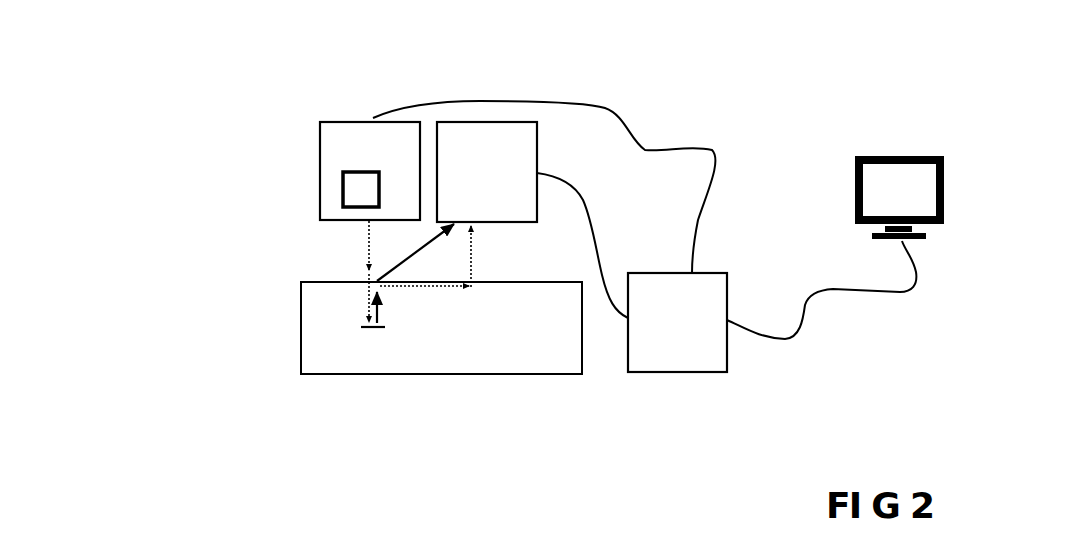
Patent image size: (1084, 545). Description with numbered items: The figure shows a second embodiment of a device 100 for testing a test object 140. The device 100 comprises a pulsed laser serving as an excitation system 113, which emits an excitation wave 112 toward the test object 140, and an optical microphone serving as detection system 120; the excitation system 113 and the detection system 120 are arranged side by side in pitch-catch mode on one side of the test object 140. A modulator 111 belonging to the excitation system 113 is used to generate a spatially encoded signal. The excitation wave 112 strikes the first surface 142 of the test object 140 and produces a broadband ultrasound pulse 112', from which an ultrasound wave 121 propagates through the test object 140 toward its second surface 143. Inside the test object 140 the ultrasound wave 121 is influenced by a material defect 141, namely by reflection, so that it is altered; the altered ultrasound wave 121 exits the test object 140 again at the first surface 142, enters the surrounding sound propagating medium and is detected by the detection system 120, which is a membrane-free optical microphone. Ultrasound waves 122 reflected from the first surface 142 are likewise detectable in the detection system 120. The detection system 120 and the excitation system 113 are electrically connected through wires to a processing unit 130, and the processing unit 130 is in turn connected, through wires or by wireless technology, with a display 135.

The device 100 is at (278, 67).
The excitation system 113 is at (333, 143).
The modulator 111 is at (348, 190).
The excitation wave 112 is at (252, 237).
The broadband ultrasound pulse 112' is at (216, 259).
The first surface 142 is at (313, 282).
The test object 140 is at (308, 302).
The material defect 141 is at (361, 325).
The second surface 143 is at (306, 375).
The detection system 120 is at (500, 134).
The ultrasound wave 121 is at (467, 253).
The reflected ultrasound waves 122 is at (412, 253).
The processing unit 130 is at (707, 358).
The display 135 is at (867, 173).